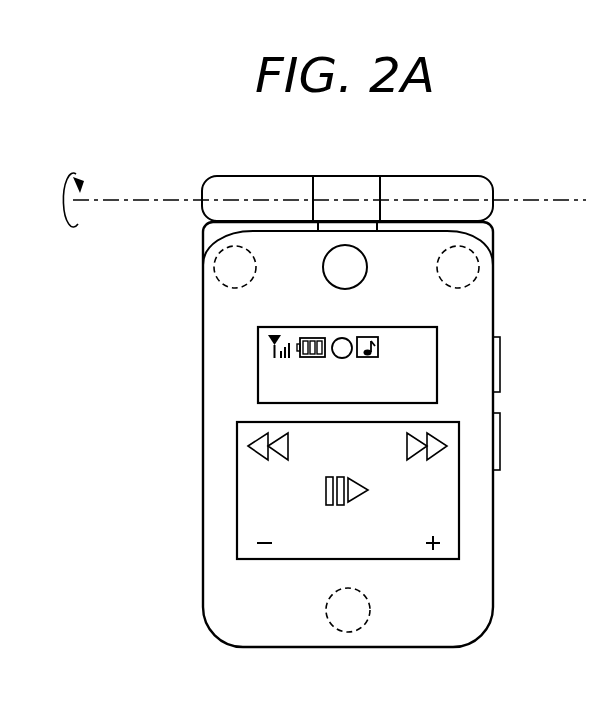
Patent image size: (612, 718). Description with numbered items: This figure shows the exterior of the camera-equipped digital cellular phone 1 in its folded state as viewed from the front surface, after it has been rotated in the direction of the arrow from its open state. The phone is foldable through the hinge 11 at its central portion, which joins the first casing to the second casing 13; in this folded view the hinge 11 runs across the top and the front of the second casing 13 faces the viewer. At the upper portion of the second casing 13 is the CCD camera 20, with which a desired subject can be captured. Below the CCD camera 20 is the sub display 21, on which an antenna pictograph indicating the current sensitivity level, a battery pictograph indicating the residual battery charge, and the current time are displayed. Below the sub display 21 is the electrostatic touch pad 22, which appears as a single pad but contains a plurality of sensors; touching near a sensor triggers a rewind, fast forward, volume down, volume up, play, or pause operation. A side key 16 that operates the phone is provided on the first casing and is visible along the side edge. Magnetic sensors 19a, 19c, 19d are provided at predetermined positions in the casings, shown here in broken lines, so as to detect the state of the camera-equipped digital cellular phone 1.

The camera-equipped digital cellular phone 1 is at (510, 517).
The hinge 11 is at (497, 181).
The second casing 13 is at (220, 432).
The side key 16 is at (500, 366).
The magnetic sensor 19a is at (325, 613).
The magnetic sensor 19c is at (480, 266).
The magnetic sensor 19d is at (207, 262).
The CCD camera 20 is at (345, 245).
The sub display 21 is at (258, 366).
The electrostatic touch pad 22 is at (237, 489).